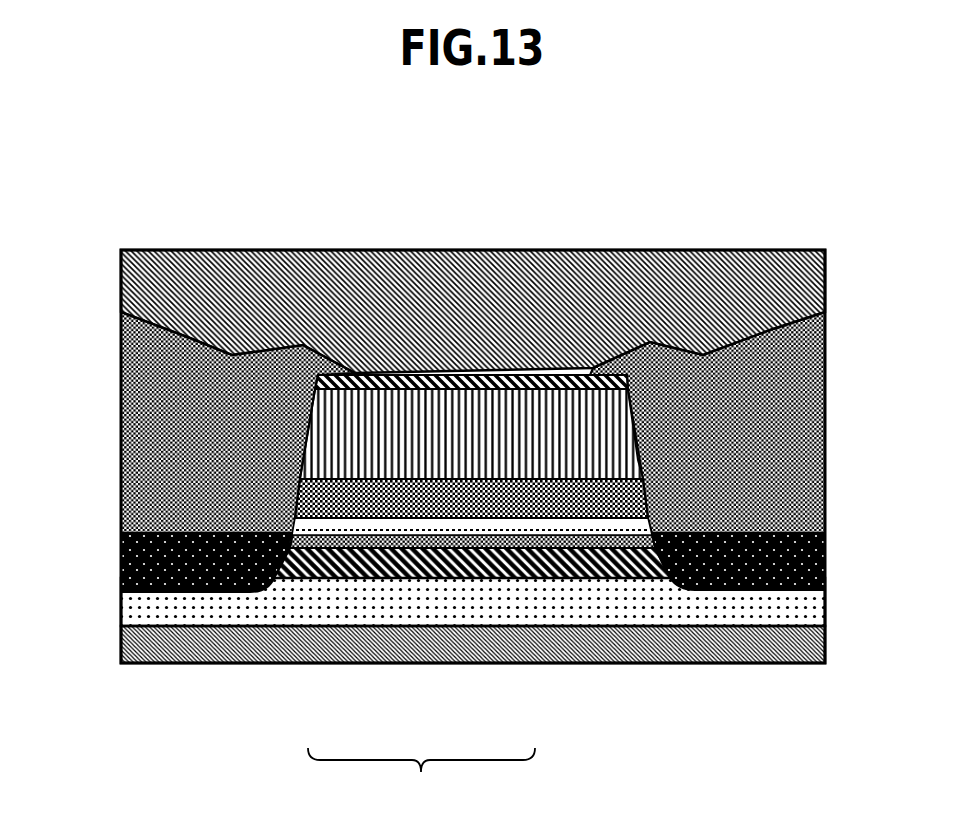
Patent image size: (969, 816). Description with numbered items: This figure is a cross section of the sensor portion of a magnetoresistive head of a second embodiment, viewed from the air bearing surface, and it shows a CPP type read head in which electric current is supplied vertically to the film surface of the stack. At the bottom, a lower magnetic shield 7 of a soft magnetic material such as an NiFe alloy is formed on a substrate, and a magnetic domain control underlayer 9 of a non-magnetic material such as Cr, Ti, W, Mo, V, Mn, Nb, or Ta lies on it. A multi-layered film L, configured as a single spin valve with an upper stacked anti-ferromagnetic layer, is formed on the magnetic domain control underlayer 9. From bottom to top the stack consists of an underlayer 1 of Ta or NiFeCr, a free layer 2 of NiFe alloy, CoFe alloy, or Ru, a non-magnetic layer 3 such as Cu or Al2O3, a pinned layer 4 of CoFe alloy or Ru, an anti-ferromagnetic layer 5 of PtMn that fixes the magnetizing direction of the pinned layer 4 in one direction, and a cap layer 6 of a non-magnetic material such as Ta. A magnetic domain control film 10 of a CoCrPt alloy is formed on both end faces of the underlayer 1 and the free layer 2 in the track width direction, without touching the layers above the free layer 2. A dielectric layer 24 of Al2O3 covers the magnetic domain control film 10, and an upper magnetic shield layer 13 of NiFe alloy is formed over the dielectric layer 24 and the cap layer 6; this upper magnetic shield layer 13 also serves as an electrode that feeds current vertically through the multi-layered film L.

The underlayer 1 is at (331, 556).
The free layer 2 is at (361, 540).
The non-magnetic layer 3 is at (395, 526).
The pinned layer 4 is at (429, 512).
The anti-ferromagnetic layer 5 is at (467, 458).
The cap layer 6 is at (521, 390).
The lower magnetic shield 7 is at (638, 650).
The magnetic domain control underlayer 9 is at (720, 598).
The magnetic domain control film 10 is at (122, 567).
The upper magnetic shield layer 13 is at (790, 283).
The dielectric layer 24 is at (137, 452).
The multi-layered film L is at (421, 777).